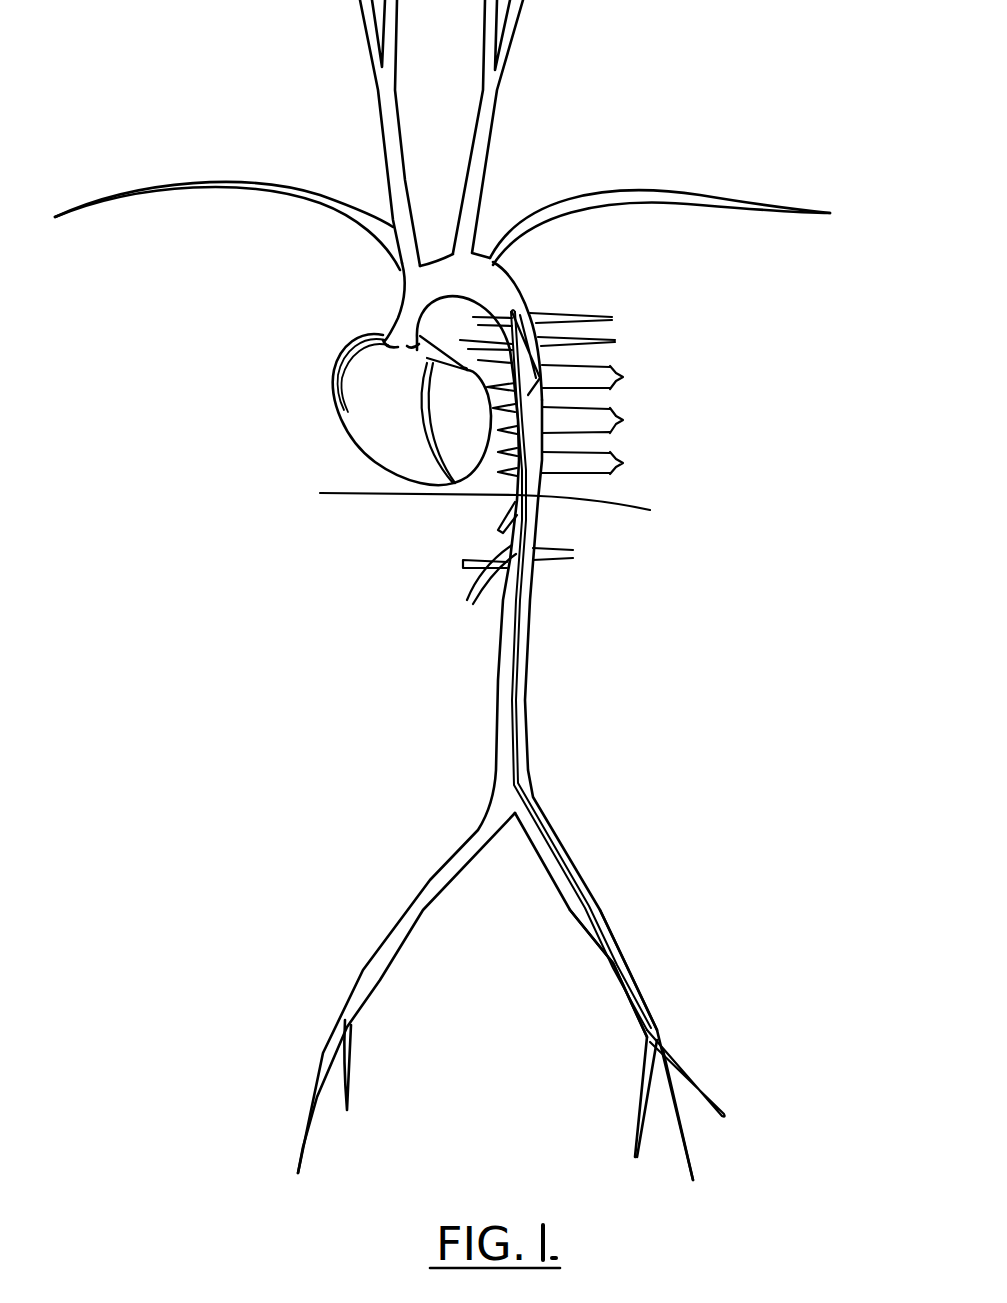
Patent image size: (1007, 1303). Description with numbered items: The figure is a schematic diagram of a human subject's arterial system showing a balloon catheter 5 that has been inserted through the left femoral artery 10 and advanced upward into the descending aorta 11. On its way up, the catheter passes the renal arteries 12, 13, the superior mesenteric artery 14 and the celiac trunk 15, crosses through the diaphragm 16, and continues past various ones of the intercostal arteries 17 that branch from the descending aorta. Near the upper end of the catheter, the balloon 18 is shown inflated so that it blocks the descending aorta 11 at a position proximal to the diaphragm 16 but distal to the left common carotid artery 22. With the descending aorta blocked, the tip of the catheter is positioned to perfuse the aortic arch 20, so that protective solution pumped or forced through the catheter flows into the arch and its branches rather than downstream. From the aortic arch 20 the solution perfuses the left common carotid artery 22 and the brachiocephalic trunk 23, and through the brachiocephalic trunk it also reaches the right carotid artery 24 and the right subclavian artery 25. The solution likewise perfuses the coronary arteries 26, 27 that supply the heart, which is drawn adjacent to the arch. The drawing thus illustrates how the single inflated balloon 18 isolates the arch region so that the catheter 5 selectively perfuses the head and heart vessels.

The balloon catheter 5 is at (702, 1088).
The left femoral artery 10 is at (645, 998).
The descending aorta 11 is at (523, 723).
The renal artery 12 is at (557, 563).
The renal artery 13 is at (467, 570).
The superior mesenteric artery 14 is at (500, 548).
The celiac trunk 15 is at (500, 513).
The diaphragm 16 is at (373, 496).
The intercostal arteries 17 is at (473, 318).
The balloon 18 is at (537, 360).
The aortic arch 20 is at (512, 278).
The left common carotid artery 22 is at (474, 198).
The brachiocephalic trunk 23 is at (392, 258).
The right carotid artery 24 is at (382, 153).
The right subclavian artery 25 is at (313, 205).
The coronary artery 26 is at (334, 373).
The coronary artery 27 is at (422, 360).